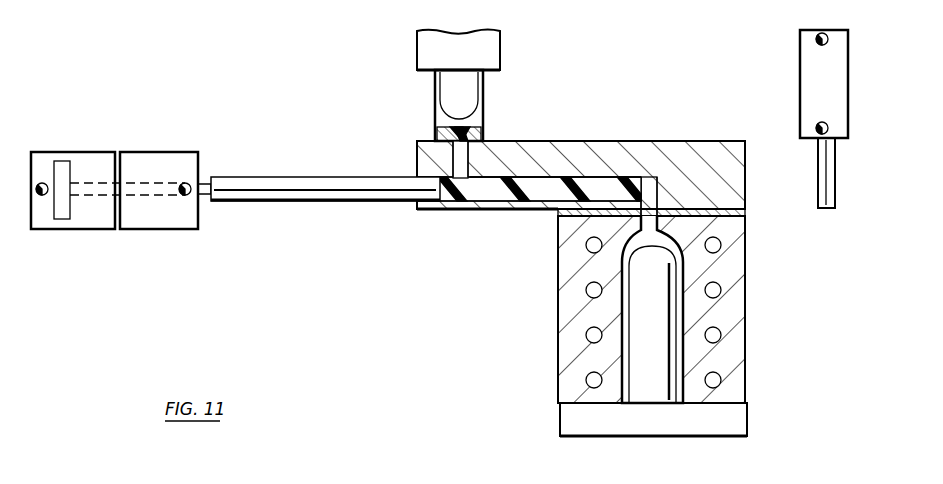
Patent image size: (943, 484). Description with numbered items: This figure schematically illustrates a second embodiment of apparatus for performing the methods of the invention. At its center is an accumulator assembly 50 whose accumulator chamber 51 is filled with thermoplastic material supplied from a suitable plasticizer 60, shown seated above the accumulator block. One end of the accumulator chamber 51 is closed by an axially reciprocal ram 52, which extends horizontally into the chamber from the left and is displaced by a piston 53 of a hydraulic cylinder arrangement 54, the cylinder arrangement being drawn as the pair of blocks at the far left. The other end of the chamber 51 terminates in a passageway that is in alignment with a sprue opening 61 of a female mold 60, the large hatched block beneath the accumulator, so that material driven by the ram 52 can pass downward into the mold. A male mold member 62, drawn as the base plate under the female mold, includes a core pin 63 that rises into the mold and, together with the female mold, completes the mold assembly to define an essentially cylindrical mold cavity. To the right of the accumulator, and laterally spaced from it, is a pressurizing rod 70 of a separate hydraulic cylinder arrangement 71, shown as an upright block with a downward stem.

The accumulator assembly 50 is at (588, 143).
The accumulator chamber 51 is at (523, 143).
The ram 52 is at (304, 182).
The piston 53 is at (205, 175).
The hydraulic cylinder arrangement 54 is at (134, 160).
The plasticizer 60 is at (427, 47).
The sprue opening 61 is at (654, 234).
The male mold member 62 is at (568, 420).
The core pin 63 is at (660, 331).
The pressurizing rod 70 is at (803, 63).
The hydraulic cylinder arrangement 71 is at (827, 193).